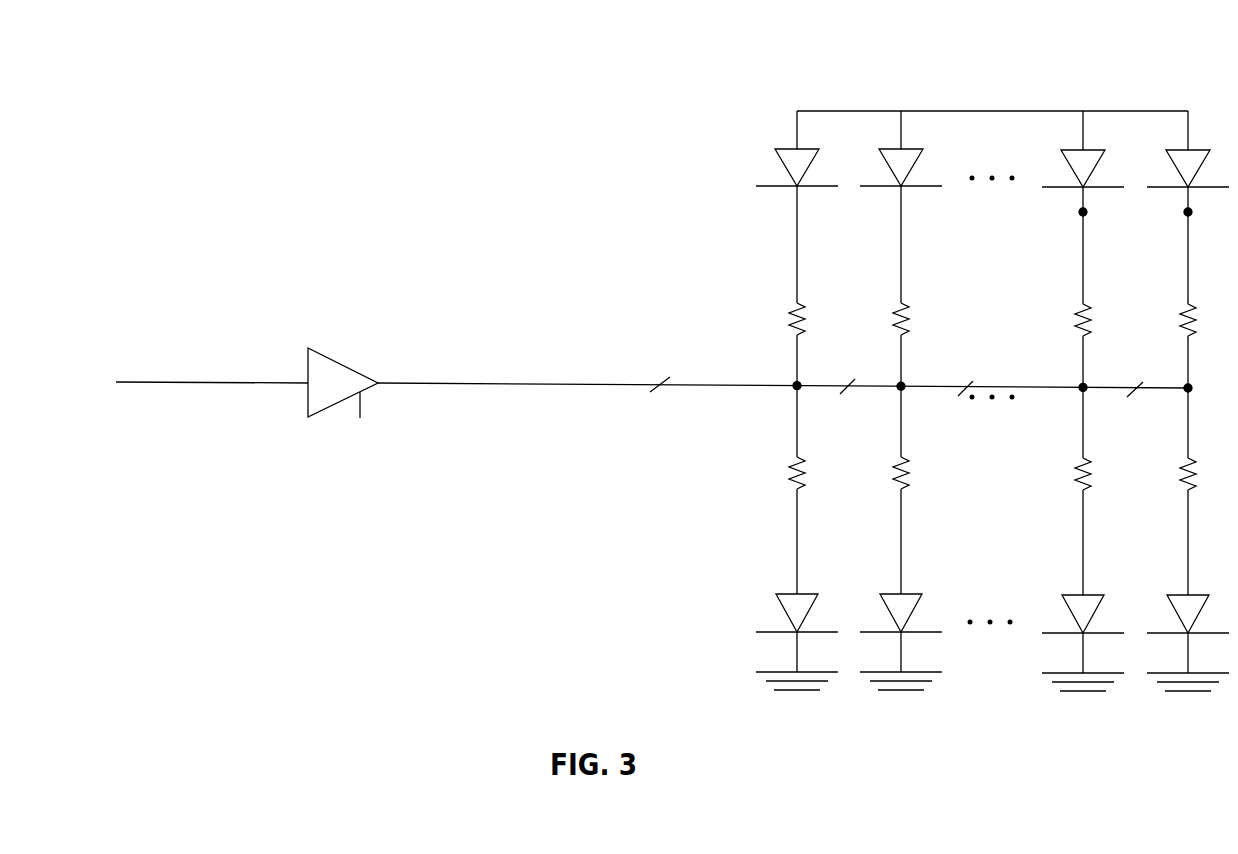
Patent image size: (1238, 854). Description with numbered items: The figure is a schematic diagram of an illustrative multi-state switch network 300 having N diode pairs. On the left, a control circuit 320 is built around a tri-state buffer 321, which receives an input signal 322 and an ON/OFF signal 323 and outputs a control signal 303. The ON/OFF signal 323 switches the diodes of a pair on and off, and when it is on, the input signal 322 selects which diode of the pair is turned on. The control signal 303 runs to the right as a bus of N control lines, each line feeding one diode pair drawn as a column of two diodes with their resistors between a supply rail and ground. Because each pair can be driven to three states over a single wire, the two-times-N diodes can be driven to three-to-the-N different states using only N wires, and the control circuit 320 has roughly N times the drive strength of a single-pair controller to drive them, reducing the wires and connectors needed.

The multi-state switch network 300 is at (133, 61).
The control circuit 320 is at (356, 318).
The tri-state buffer 321 is at (329, 356).
The input signal 322 is at (212, 370).
The ON/OFF signal 323 is at (360, 421).
The control signal 303 is at (783, 371).